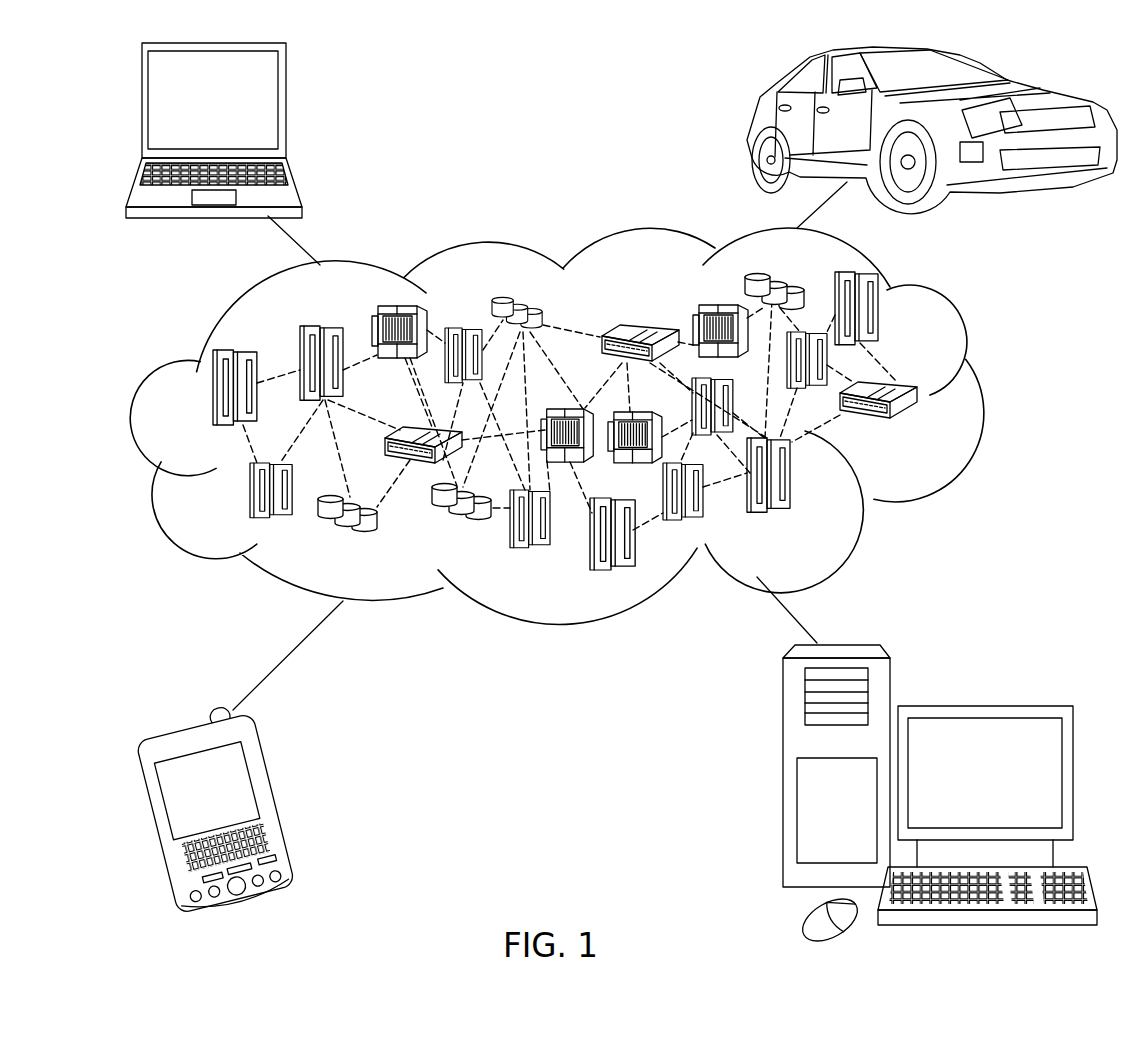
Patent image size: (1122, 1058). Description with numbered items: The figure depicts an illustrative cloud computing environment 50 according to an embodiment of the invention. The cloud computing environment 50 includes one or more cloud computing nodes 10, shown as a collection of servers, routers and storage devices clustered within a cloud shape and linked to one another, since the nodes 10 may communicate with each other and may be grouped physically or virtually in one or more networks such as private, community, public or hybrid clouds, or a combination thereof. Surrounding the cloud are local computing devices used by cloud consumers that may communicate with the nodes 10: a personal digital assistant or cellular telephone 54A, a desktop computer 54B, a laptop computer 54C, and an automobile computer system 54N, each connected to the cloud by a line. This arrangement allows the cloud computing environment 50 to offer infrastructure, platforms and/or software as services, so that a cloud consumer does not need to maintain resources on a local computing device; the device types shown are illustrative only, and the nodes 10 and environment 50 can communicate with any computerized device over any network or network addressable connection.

The cloud computing nodes 10 is at (938, 434).
The cloud computing environment 50 is at (588, 426).
The personal digital assistant (PDA) or cellular telephone 54A is at (273, 802).
The desktop computer 54B is at (983, 706).
The laptop computer 54C is at (286, 108).
The automobile computer system 54N is at (752, 127).